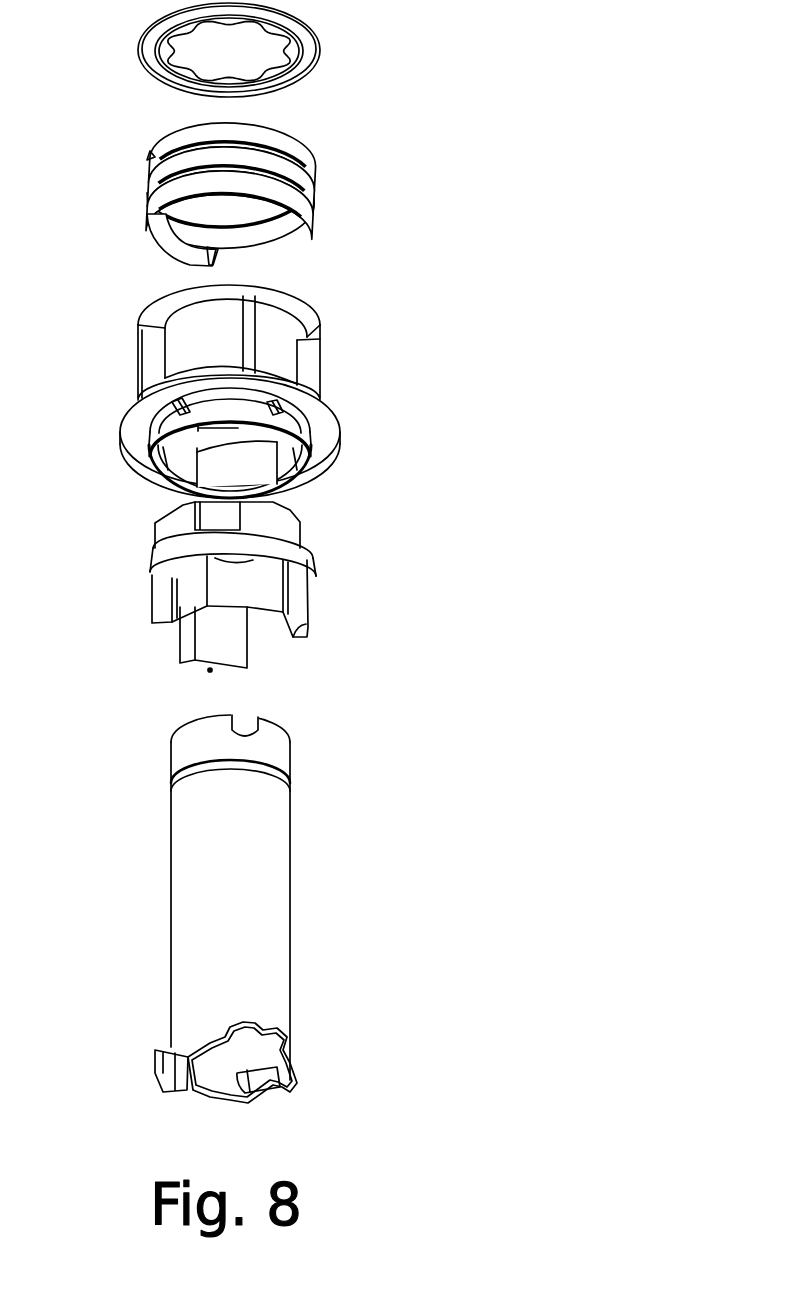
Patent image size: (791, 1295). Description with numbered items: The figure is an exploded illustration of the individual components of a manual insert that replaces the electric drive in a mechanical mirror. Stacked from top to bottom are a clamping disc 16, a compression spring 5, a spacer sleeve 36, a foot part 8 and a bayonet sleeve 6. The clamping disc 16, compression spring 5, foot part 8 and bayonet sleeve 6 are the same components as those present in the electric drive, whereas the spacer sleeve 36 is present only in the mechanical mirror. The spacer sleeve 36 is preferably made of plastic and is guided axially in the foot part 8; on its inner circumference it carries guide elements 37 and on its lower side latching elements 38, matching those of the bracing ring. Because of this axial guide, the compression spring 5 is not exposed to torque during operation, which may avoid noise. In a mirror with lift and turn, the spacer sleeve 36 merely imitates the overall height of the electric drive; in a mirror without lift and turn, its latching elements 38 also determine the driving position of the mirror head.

The clamping disc 16 is at (307, 38).
The compression spring 5 is at (290, 175).
The spacer sleeve 36 is at (330, 308).
The guide elements 37 is at (182, 457).
The latching elements 38 is at (273, 405).
The foot part 8 is at (287, 538).
The bayonet sleeve 6 is at (243, 875).